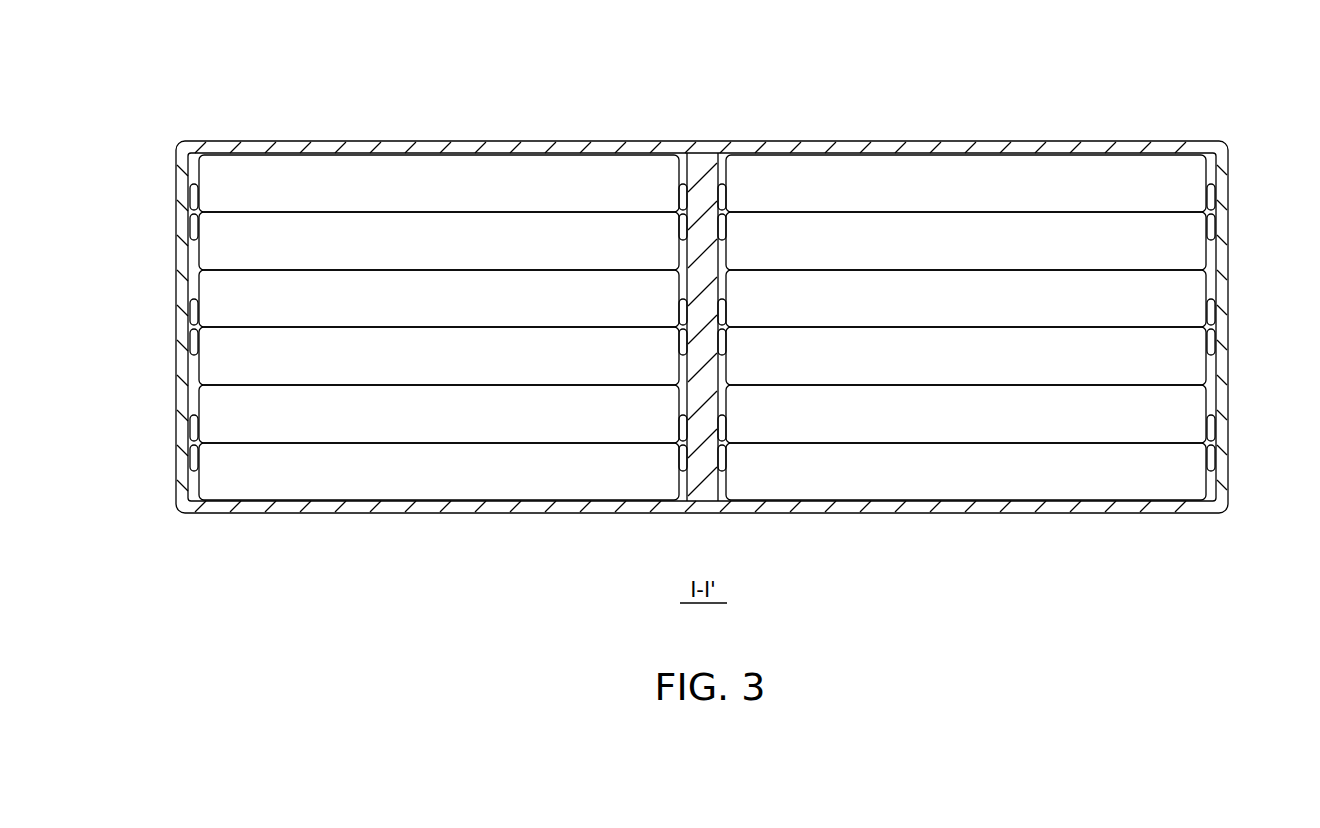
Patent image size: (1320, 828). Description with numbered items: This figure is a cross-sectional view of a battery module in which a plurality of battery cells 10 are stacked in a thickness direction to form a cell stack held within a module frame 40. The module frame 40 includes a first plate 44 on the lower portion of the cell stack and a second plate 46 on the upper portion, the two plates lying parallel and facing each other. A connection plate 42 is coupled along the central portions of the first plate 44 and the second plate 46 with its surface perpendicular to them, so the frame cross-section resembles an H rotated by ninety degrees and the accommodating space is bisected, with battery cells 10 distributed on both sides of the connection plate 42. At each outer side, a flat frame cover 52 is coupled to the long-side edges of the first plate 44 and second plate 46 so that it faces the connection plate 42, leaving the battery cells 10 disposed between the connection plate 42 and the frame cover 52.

The battery cell 10 is at (413, 413).
The module frame 40 is at (1116, 132).
The connection plate 42 is at (704, 177).
The first plate 44 is at (886, 514).
The second plate 46 is at (973, 150).
The frame cover 52 is at (1228, 253).